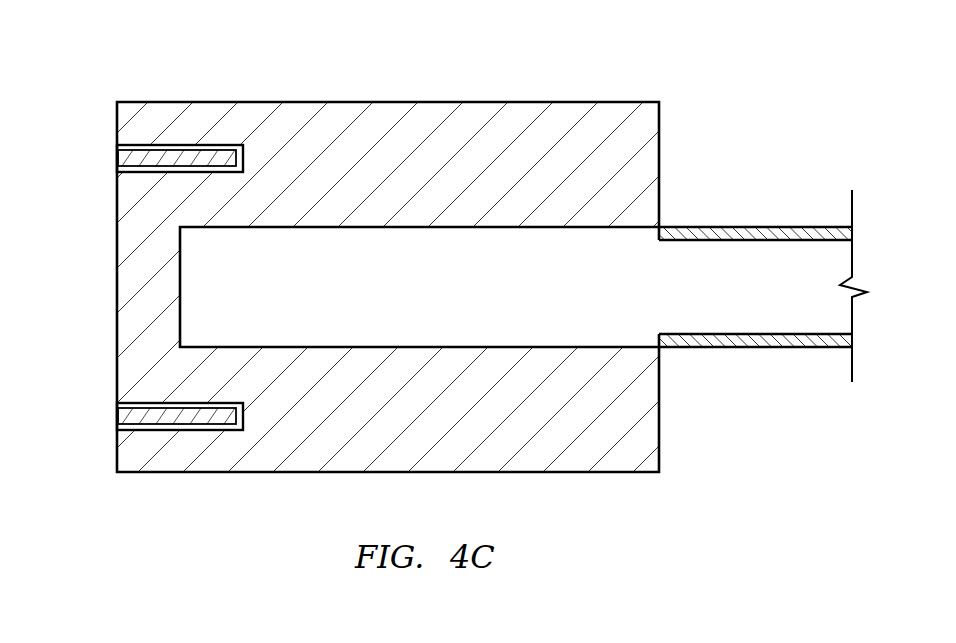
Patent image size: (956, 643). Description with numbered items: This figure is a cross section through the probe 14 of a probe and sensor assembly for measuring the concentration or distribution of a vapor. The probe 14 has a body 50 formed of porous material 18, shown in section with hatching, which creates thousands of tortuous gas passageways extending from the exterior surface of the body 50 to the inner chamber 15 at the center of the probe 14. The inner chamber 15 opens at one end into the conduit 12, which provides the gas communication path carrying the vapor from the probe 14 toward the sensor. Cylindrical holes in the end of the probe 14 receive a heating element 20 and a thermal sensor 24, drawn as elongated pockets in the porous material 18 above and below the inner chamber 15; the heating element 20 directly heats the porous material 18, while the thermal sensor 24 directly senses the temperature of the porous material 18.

The conduit 12 is at (744, 227).
The probe 14 is at (538, 53).
The interior chamber 15 is at (408, 283).
The porous material 18 is at (323, 128).
The heating element 20 is at (117, 158).
The thermal sensor 24 is at (117, 415).
The body 50 is at (622, 96).